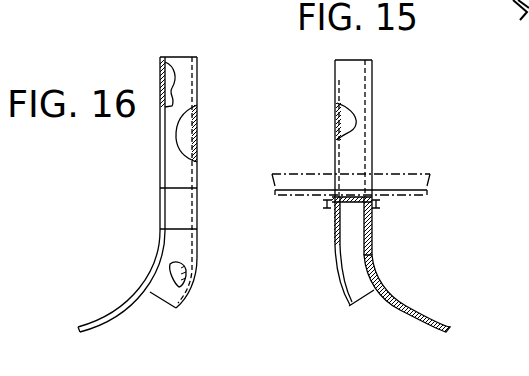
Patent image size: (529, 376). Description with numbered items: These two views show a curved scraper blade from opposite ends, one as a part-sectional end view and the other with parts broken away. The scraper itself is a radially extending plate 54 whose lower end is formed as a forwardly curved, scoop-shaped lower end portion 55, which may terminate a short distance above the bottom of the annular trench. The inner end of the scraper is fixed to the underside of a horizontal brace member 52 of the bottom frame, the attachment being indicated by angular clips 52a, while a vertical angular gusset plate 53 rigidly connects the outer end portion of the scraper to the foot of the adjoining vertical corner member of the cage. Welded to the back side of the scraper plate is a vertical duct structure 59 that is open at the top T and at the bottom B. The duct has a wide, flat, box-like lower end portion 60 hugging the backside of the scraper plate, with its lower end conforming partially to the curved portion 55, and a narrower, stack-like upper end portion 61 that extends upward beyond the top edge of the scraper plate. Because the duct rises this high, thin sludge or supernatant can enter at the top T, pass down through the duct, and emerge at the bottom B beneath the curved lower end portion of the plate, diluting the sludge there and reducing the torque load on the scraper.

In FIG. 15, the horizontal brace member 52 is at (303, 177).
In FIG. 15, the angular clip 52a is at (466, 236).
In FIG. 15, the vertical angular gusset plate 53 is at (527, 14).
In FIG. 16, the radially extending plate 54 is at (161, 152).
In FIG. 15, the radially extending plate 54 is at (372, 158).
In FIG. 16, the curved scoop-shaped lower end portion 55 is at (107, 318).
In FIG. 15, the curved scoop-shaped lower end portion 55 is at (410, 313).
In FIG. 16, the vertical duct structure 59 is at (199, 133).
In FIG. 15, the vertical duct structure 59 is at (376, 77).
In FIG. 16, the box like lower end portion 60 is at (192, 273).
In FIG. 15, the box like lower end portion 60 is at (333, 225).
In FIG. 16, the stack like upper end portion 61 is at (197, 76).
In FIG. 16, the top T is at (176, 56).
In FIG. 15, the top T is at (347, 60).
In FIG. 16, the bottom B is at (158, 302).
In FIG. 15, the bottom B is at (357, 302).